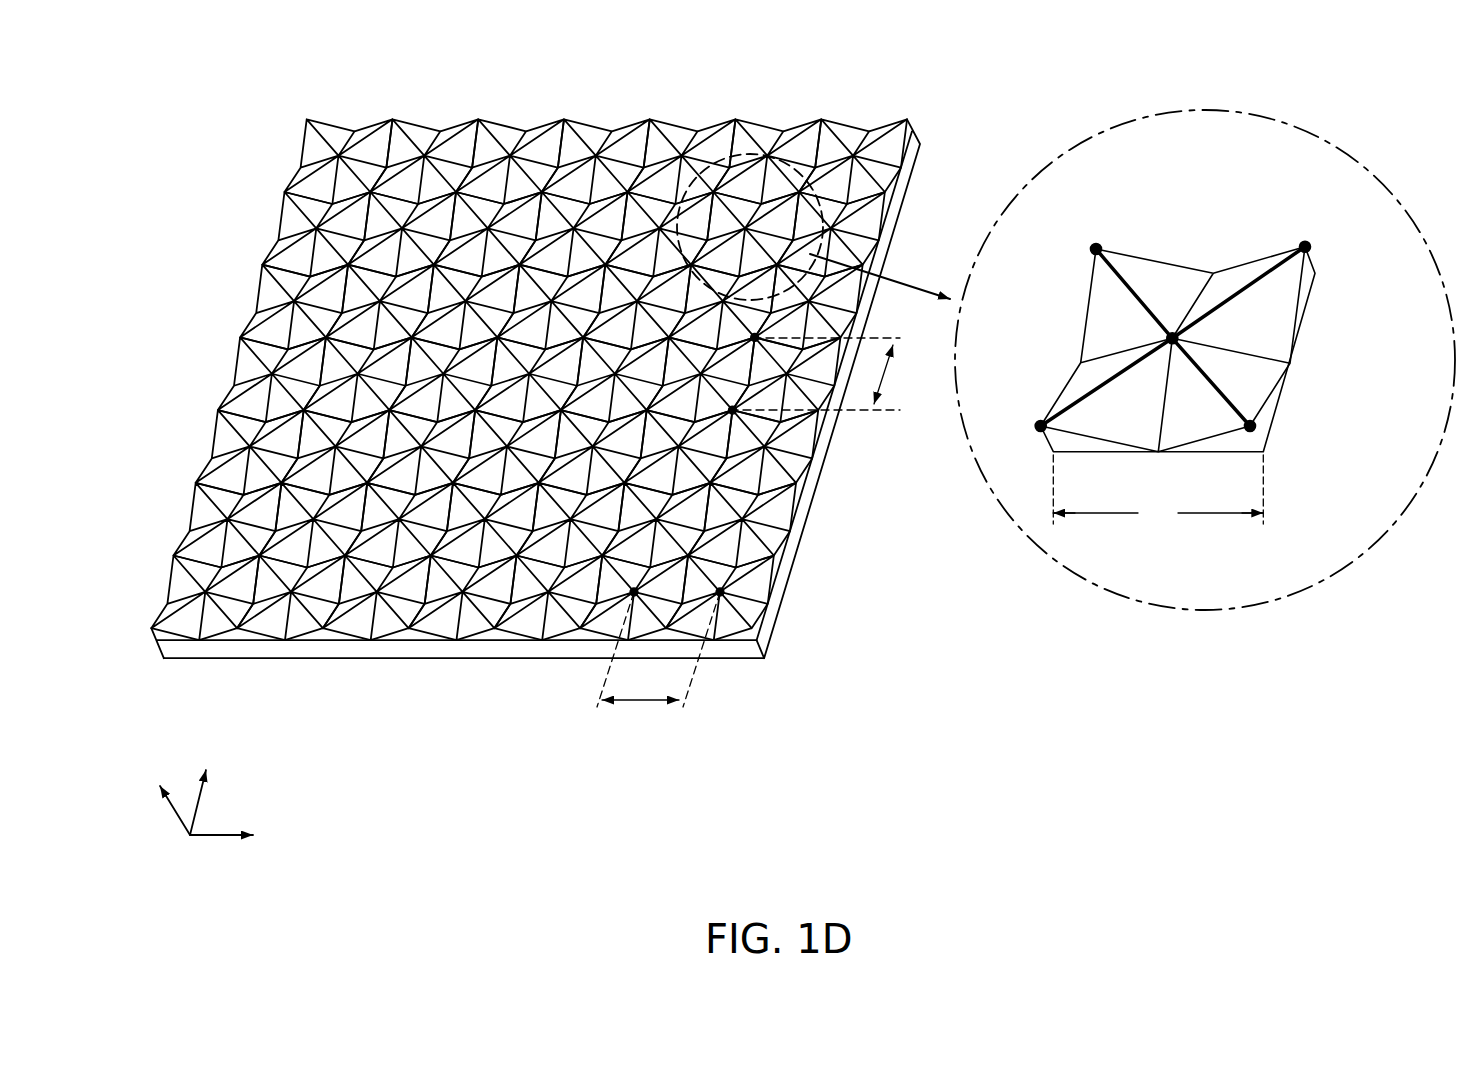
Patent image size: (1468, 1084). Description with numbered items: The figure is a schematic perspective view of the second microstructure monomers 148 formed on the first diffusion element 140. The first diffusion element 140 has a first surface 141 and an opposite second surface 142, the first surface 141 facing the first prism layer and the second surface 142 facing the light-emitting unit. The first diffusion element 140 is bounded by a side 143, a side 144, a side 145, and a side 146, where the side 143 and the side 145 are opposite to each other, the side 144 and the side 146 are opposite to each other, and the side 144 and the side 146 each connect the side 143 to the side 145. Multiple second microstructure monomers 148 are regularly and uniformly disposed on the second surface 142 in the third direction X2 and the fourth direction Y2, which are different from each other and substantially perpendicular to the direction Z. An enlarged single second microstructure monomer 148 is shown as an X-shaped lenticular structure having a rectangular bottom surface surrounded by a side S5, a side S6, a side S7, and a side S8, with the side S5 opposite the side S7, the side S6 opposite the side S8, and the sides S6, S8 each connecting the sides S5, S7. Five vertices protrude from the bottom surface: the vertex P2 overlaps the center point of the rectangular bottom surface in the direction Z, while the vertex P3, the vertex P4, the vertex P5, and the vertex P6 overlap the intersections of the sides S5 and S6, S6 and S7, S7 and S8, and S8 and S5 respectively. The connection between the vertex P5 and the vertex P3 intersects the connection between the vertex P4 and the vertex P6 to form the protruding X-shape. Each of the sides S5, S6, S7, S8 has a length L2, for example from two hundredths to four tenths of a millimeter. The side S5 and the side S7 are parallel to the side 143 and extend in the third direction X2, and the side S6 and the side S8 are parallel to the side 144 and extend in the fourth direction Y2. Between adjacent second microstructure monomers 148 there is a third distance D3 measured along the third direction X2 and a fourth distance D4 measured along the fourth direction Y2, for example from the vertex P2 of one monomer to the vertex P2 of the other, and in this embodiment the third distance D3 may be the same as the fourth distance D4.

The first diffusion element 140 is at (500, 427).
The first surface 141 is at (204, 630).
The second surface 142 is at (202, 662).
The side 143 is at (461, 650).
The side 144 is at (812, 474).
The side 145 is at (500, 395).
The side 146 is at (493, 379).
The second microstructure monomer 148 is at (1174, 341).
The vertex P2 is at (1169, 320).
The vertex P3 is at (1249, 411).
The vertex P4 is at (1308, 233).
The vertex P5 is at (1092, 236).
The vertex P6 is at (1033, 414).
The side S5 is at (1231, 450).
The side S6 is at (1309, 297).
The side S7 is at (1137, 235).
The side S8 is at (1074, 309).
The length L2 is at (1158, 492).
The third distance D3 is at (678, 536).
The fourth distance D4 is at (830, 374).
The third direction X2 is at (240, 840).
The fourth direction Y2 is at (206, 790).
The direction Z is at (167, 793).